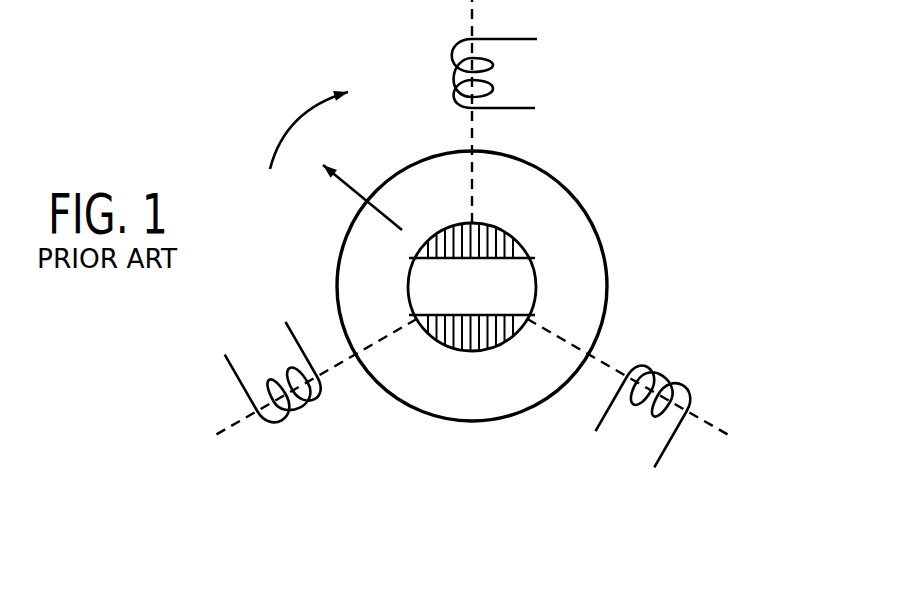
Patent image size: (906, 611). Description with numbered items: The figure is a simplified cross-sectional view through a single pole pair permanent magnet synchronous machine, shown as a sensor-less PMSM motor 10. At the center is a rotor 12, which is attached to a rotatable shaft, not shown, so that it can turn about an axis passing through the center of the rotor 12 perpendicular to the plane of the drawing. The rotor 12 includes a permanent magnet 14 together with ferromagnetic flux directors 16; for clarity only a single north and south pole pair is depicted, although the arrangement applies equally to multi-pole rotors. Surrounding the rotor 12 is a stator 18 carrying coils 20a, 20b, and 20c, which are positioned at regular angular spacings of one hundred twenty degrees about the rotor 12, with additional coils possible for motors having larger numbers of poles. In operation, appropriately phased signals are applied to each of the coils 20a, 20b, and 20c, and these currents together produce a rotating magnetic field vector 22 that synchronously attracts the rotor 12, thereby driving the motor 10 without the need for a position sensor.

The sensor-less PMSM motor 10 is at (667, 195).
The rotor 12 is at (522, 248).
The permanent magnet 14 is at (500, 305).
The ferromagnetic flux directors 16 is at (436, 325).
The stator 18 is at (608, 287).
The coil 20a is at (687, 378).
The coil 20b is at (462, 40).
The coil 20c is at (230, 372).
The rotating magnetic field vector 22 is at (356, 187).